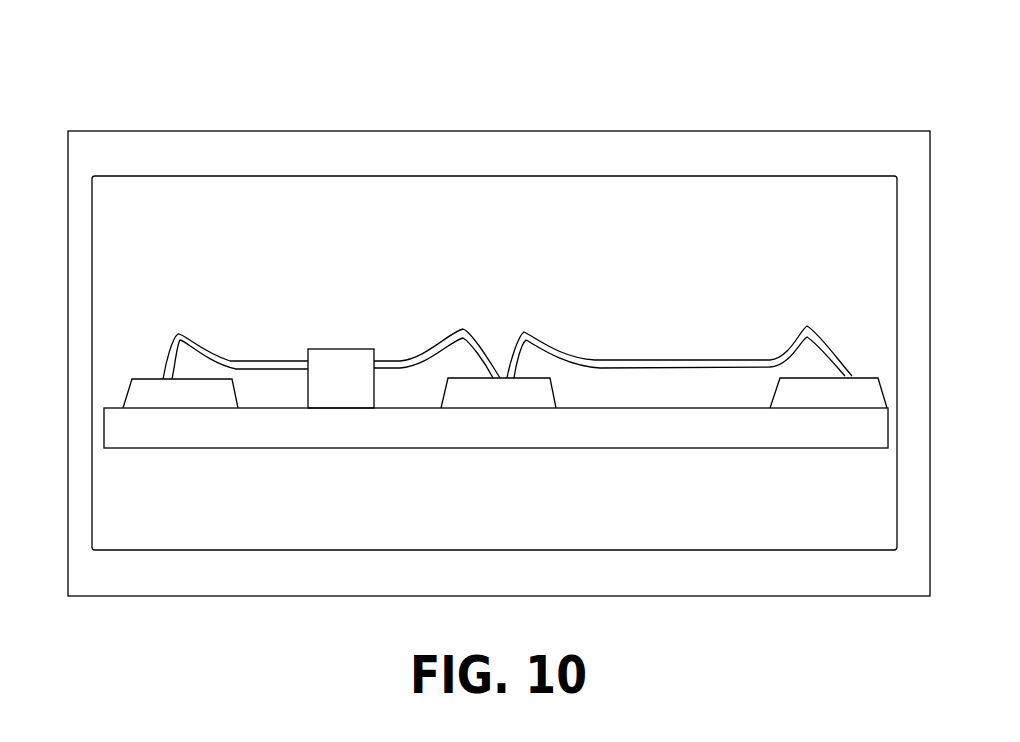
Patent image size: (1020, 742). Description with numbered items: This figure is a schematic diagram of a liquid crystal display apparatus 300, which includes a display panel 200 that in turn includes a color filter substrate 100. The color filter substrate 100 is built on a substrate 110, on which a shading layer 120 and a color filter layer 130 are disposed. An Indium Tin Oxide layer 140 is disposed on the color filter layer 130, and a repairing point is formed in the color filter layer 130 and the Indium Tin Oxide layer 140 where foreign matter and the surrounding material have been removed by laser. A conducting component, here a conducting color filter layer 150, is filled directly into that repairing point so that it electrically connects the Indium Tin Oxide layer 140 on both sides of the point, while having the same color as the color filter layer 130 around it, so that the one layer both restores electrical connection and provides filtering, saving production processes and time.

The color filter substrate 100 is at (496, 294).
The substrate 110 is at (495, 430).
The shading layer 120 is at (143, 388).
The color filter layer 130 is at (273, 386).
The Indium Tin Oxide layer 140 is at (231, 360).
The conducting color filter layer 150 is at (340, 378).
The display panel 200 is at (614, 177).
The liquid crystal display apparatus 300 is at (333, 132).